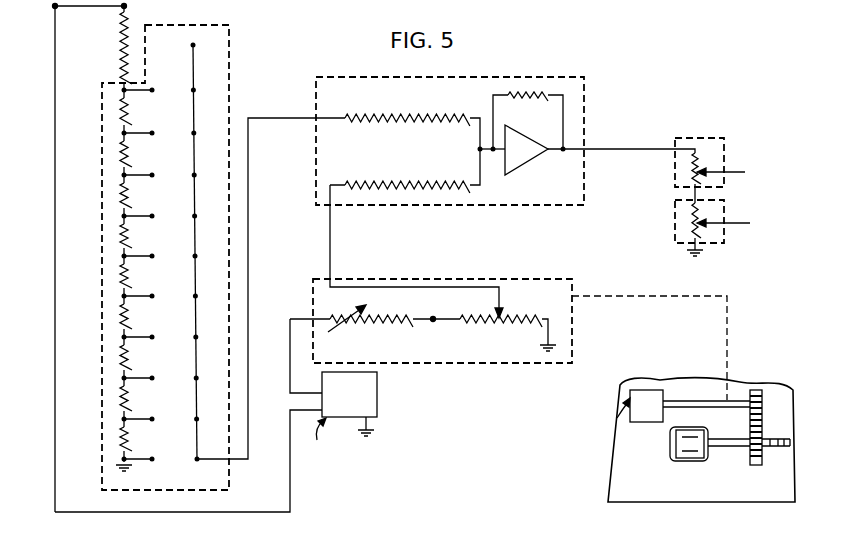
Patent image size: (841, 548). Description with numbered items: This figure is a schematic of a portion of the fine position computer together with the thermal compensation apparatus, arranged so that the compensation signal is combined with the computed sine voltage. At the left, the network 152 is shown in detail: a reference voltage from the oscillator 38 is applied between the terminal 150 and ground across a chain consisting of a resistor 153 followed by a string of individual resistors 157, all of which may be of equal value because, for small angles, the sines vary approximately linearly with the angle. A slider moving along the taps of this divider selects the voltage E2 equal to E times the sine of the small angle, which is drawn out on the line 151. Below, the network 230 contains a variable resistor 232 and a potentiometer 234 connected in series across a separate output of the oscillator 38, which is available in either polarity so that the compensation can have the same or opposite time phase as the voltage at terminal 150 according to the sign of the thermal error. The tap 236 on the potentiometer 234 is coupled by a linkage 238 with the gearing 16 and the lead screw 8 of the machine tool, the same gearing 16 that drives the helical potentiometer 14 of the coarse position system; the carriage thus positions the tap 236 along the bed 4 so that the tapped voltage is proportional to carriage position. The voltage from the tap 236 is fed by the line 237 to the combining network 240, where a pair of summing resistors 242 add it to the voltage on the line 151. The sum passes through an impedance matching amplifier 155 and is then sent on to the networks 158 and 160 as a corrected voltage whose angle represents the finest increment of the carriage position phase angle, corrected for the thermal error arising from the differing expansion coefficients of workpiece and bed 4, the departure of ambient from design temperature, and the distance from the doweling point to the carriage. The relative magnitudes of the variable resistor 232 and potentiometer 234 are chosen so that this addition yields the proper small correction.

The terminal 150 is at (54, 10).
The resistor 153 is at (118, 33).
The network 152 is at (232, 53).
The individual resistors 157 is at (127, 229).
The line 151 is at (278, 117).
The combining network 240 is at (584, 106).
The summing resistors 242 is at (398, 117).
The impedance matching amplifier 155 is at (513, 130).
The network 158 is at (724, 150).
The network 160 is at (724, 208).
The line 237 is at (331, 247).
The network 230 is at (565, 279).
The variable resistor 232 is at (386, 318).
The tap 236 is at (501, 312).
The potentiometer 234 is at (503, 325).
The linkage 238 is at (729, 303).
The oscillator 38 is at (378, 391).
The helical potentiometer 14 is at (643, 389).
The gearing 16 is at (756, 389).
The lead screw 8 is at (768, 437).
The bed 4 is at (764, 502).